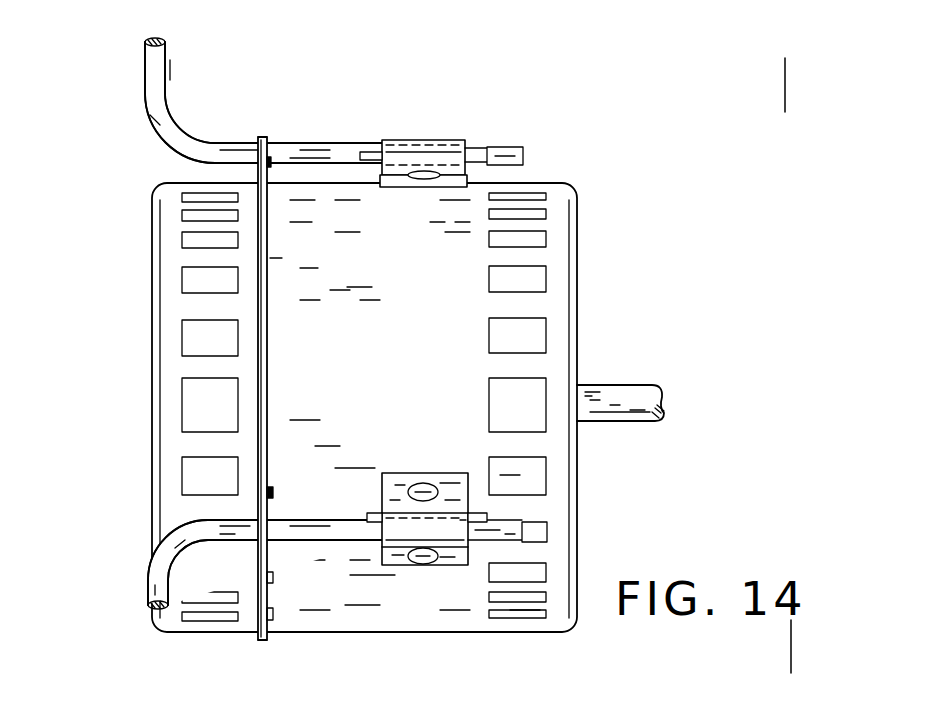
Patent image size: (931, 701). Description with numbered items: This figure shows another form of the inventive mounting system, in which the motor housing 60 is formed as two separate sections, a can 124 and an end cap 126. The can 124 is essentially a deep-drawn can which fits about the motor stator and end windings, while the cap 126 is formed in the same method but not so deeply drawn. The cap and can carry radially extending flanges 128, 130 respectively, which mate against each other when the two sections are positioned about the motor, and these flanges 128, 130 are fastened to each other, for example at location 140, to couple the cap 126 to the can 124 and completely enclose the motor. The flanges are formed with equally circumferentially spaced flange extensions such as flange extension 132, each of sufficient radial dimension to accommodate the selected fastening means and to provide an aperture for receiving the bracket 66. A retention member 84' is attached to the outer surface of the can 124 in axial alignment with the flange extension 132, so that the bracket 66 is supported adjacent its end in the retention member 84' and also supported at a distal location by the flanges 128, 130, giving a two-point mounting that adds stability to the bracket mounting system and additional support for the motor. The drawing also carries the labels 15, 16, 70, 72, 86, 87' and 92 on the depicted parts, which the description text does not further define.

The section line for FIG. 15 is at (795, 68).
The electrode/housing body 16 is at (340, 280).
The motor housing 60 is at (577, 259).
The bracket 66 is at (304, 136).
The tube end portion 70 is at (487, 151).
The stop collar 72 is at (364, 151).
The retention member 84' is at (424, 343).
The end fitting 86 is at (513, 150).
The clamp body section 87' is at (435, 352).
The fastener opening 92 is at (427, 180).
The can section 124 is at (574, 188).
The end cap section 126 is at (158, 192).
The flange 128 is at (262, 641).
The flange 130 is at (268, 640).
The flange extension 132 is at (262, 136).
The fastening location 140 is at (268, 162).